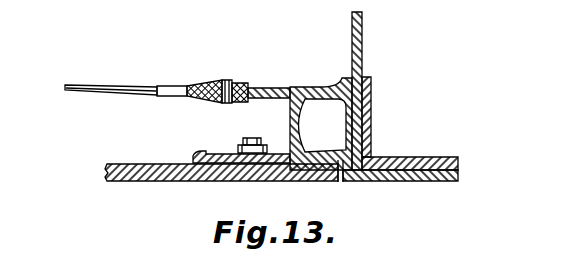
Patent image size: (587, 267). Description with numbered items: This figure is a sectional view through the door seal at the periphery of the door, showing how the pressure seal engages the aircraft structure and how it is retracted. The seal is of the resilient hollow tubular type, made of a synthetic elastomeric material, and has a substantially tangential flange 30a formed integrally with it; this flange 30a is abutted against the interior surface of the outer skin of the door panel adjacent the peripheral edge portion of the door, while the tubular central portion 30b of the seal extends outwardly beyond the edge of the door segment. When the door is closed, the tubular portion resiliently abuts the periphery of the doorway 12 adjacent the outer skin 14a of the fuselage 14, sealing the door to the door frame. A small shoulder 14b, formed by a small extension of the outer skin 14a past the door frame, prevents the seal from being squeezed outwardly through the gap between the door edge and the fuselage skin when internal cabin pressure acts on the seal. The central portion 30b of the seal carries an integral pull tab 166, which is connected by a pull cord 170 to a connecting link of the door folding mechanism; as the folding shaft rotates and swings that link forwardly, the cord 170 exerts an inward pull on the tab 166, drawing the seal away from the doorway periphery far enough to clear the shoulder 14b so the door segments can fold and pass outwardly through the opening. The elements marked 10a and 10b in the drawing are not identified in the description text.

The base plate 10a is at (124, 182).
The end edge of base plate 10b is at (339, 182).
The doorway 12 is at (349, 43).
The fuselage 14 is at (401, 146).
The outer skin 14a is at (423, 182).
The shoulder 14b is at (345, 182).
The flange 30a is at (212, 182).
The central portion of the seal 30b is at (340, 84).
The pull tab 166 is at (272, 88).
The pull cord 170 is at (88, 85).